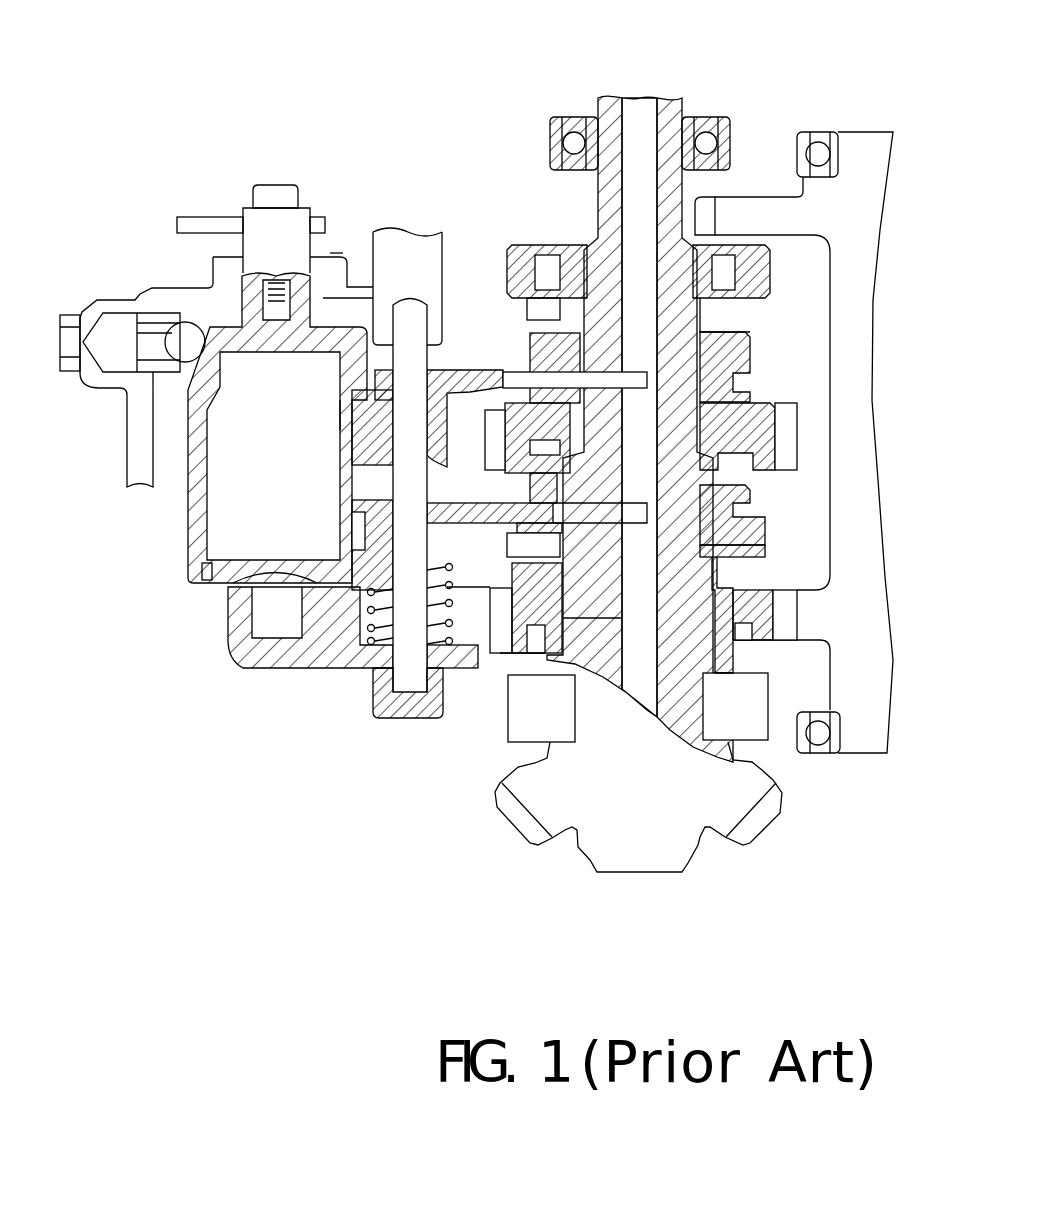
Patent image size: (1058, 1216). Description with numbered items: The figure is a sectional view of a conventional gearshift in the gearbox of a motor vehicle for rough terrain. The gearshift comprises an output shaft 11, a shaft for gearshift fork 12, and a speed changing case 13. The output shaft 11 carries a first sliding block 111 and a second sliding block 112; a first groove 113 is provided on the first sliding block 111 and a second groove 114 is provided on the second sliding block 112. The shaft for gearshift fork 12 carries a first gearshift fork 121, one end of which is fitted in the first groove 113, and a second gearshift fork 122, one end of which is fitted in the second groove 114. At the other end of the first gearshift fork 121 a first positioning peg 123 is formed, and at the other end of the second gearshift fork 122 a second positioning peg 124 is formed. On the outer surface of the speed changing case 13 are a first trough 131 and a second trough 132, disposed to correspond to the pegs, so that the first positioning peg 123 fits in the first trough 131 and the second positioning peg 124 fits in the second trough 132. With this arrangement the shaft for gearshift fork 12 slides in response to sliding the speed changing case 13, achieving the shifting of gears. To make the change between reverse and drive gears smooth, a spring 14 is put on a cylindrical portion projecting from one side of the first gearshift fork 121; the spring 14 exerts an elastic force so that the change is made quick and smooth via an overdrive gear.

The output shaft 11 is at (645, 130).
The first sliding block 111 is at (717, 547).
The second sliding block 112 is at (738, 355).
The first groove 113 is at (738, 512).
The second groove 114 is at (738, 383).
The shaft for gearshift fork 12 is at (410, 677).
The first gearshift fork 121 is at (468, 518).
The second gearshift fork 122 is at (468, 368).
The first positioning peg 123 is at (352, 506).
The second positioning peg 124 is at (352, 450).
The speed changing case 13 is at (262, 337).
The first trough 131 is at (352, 540).
The second trough 132 is at (356, 420).
The spring 14 is at (353, 640).